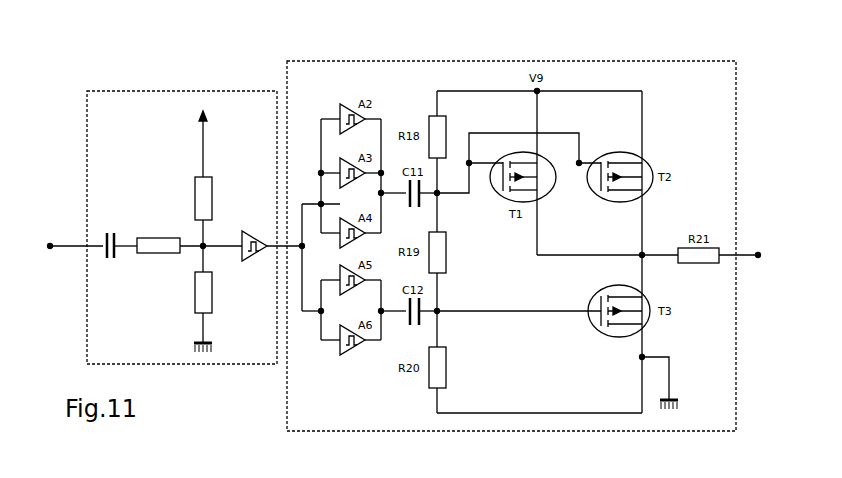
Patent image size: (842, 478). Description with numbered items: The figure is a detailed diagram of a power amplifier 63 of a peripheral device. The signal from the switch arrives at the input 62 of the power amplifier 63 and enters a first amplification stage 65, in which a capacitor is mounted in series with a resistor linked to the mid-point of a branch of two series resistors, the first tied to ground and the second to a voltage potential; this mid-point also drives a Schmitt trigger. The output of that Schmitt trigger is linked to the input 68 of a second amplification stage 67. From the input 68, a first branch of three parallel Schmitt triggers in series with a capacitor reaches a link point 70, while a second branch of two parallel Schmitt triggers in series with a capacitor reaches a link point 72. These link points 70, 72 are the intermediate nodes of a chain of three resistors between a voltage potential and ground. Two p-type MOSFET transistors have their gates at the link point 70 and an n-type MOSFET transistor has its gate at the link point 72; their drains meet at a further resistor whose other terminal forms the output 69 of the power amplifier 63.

The input 62 is at (50, 243).
The power amplifier 63 is at (224, 70).
The first amplification stage 65 is at (108, 91).
The second amplification stage 67 is at (665, 61).
The input of the second amplification stage 68 is at (303, 247).
The output 69 is at (758, 253).
The link point 70 is at (441, 191).
The link point 72 is at (441, 311).